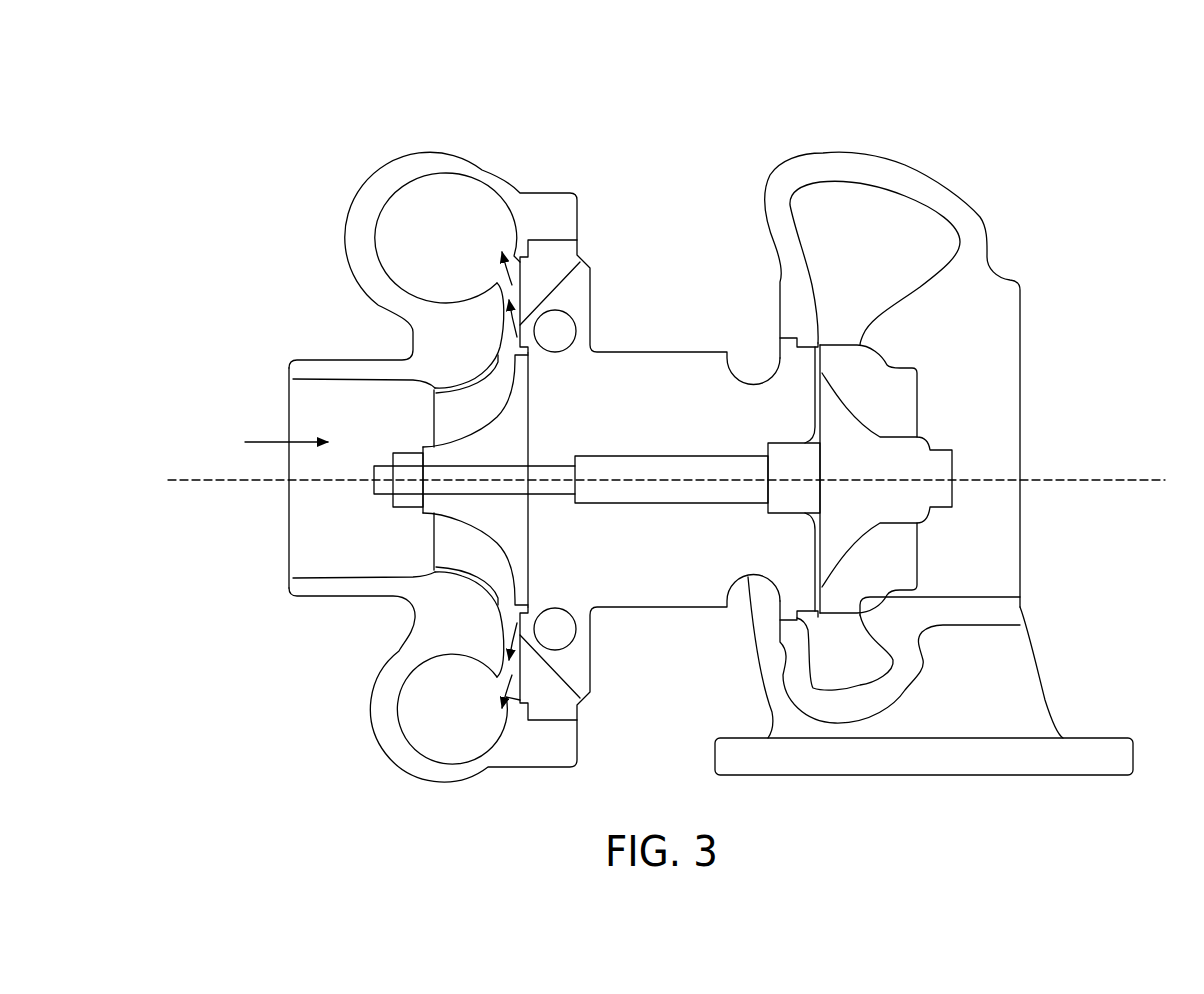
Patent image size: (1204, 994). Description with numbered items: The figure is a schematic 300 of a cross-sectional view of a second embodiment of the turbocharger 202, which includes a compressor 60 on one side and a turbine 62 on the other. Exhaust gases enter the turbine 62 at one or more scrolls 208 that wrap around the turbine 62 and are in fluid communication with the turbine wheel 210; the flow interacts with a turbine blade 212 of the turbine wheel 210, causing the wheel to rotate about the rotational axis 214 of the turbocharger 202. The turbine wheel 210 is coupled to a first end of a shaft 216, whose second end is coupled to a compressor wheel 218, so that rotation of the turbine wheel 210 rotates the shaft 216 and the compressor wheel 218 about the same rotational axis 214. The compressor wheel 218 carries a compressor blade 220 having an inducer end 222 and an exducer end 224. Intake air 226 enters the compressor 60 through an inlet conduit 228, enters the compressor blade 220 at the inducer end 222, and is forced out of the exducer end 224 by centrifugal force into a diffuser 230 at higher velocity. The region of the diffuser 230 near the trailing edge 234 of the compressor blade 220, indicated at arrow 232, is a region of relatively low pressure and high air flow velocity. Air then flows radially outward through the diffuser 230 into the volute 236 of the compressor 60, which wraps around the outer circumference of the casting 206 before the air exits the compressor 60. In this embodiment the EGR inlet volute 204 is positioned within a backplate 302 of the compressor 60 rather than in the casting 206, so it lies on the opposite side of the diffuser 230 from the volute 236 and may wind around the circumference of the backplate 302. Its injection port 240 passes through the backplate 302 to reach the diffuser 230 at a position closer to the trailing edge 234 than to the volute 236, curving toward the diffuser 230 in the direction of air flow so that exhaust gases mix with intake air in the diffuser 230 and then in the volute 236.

The schematic 300 is at (1016, 114).
The compressor 60 is at (270, 291).
The turbine 62 is at (1062, 322).
The turbocharger 202 is at (648, 176).
The EGR inlet volute 204 is at (552, 328).
The casting 206 is at (387, 182).
The scrolls 208 is at (913, 220).
The turbine wheel 210 is at (873, 457).
The turbine blade 212 is at (900, 398).
The rotational axis 214 is at (210, 478).
The shaft 216 is at (642, 456).
The compressor wheel 218 is at (513, 510).
The compressor blade 220 is at (478, 401).
The inducer end 222 is at (434, 428).
The exducer end 224 is at (499, 357).
The intake air 226 is at (265, 441).
The inlet conduit 228 is at (305, 564).
The diffuser 230 is at (503, 340).
The arrow 232 is at (497, 620).
The trailing edge 234 is at (513, 602).
The volute 236 is at (455, 195).
The injection port 240 is at (521, 323).
The backplate 302 is at (560, 262).